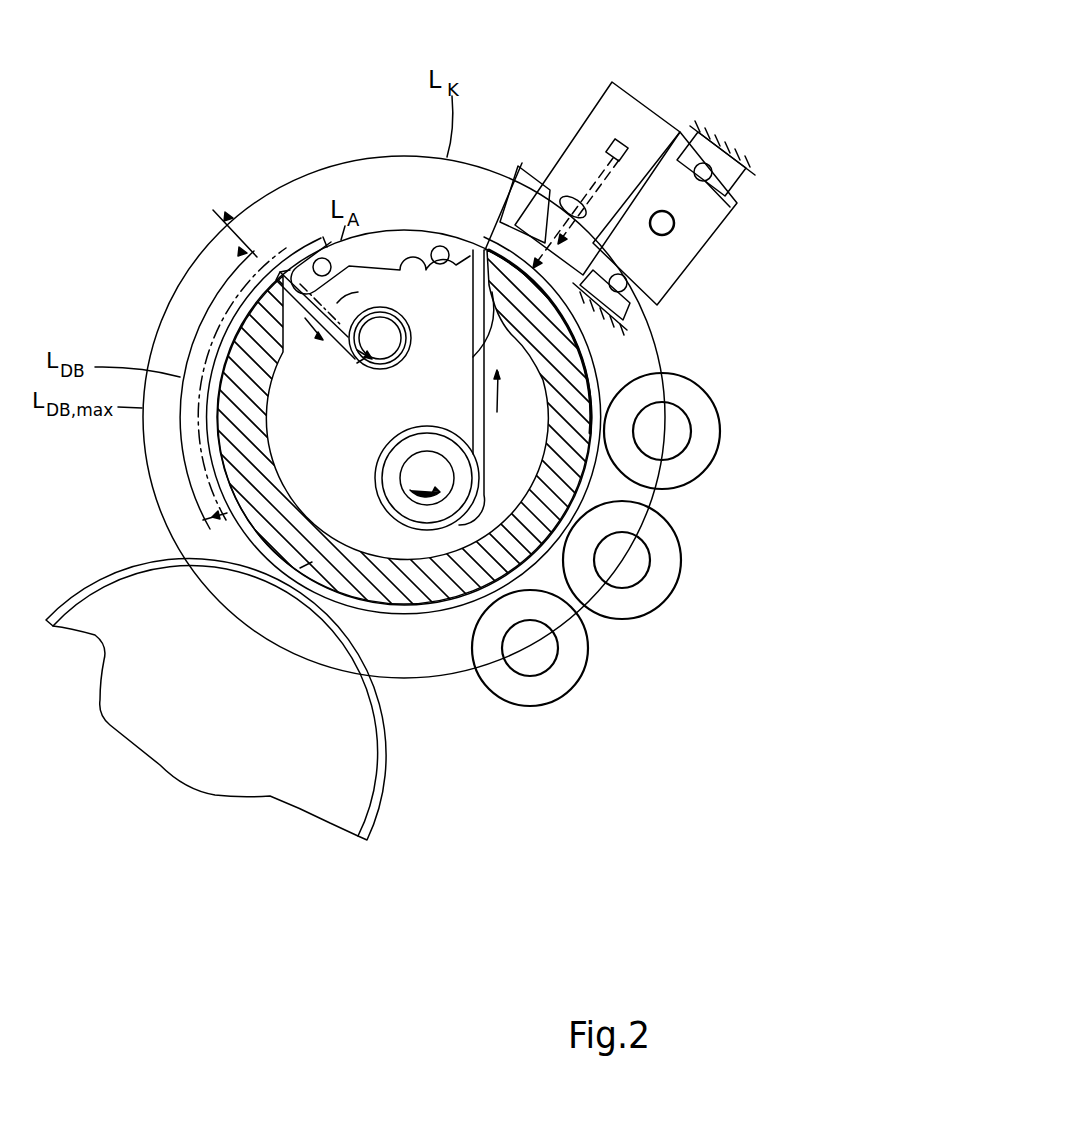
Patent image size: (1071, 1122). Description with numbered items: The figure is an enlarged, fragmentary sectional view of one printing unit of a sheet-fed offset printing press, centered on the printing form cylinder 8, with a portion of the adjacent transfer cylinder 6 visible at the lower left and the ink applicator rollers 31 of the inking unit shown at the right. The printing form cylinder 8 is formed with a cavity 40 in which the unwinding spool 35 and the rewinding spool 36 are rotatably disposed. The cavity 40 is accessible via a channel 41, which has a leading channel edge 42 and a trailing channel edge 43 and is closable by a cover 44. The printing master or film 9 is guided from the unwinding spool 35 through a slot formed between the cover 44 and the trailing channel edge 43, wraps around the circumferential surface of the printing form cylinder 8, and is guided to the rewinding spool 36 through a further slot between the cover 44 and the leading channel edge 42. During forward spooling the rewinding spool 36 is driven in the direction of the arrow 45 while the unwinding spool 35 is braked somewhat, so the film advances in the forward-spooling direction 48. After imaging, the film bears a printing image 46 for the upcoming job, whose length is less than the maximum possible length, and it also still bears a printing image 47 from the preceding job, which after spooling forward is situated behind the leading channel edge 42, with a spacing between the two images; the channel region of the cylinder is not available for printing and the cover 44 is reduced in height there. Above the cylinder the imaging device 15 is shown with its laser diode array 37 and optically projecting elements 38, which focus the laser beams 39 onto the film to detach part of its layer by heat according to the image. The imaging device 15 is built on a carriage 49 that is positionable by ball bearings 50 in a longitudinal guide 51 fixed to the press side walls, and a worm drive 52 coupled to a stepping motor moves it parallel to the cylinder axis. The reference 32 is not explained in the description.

The transfer cylinder 6 is at (290, 785).
The printing form cylinder 8 is at (225, 492).
The printing master or film 9 is at (213, 349).
The imaging or image-setting device 15 is at (592, 123).
The ink applicator rollers 31 is at (553, 685).
The drum wall region 32 is at (300, 568).
The unwinding spool 35 is at (438, 535).
The rewinding spool 36 is at (393, 335).
The laser diode array 37 is at (622, 142).
The optically projecting elements 38 is at (560, 198).
The laser beams 39 is at (520, 224).
The cavity 40 is at (207, 450).
The channel 41 is at (397, 290).
The leading channel edge 42 is at (273, 272).
The trailing channel edge 43 is at (478, 356).
The cover 44 is at (380, 230).
The arrow 45 is at (357, 363).
The printing image 46 is at (203, 472).
The printing image 47 is at (365, 291).
The forward-spooling direction 48 is at (280, 296).
The carriage 49 is at (700, 233).
The ball bearings 50 is at (727, 207).
The longitudinal guide 51 is at (640, 305).
The worm drive 52 is at (667, 232).